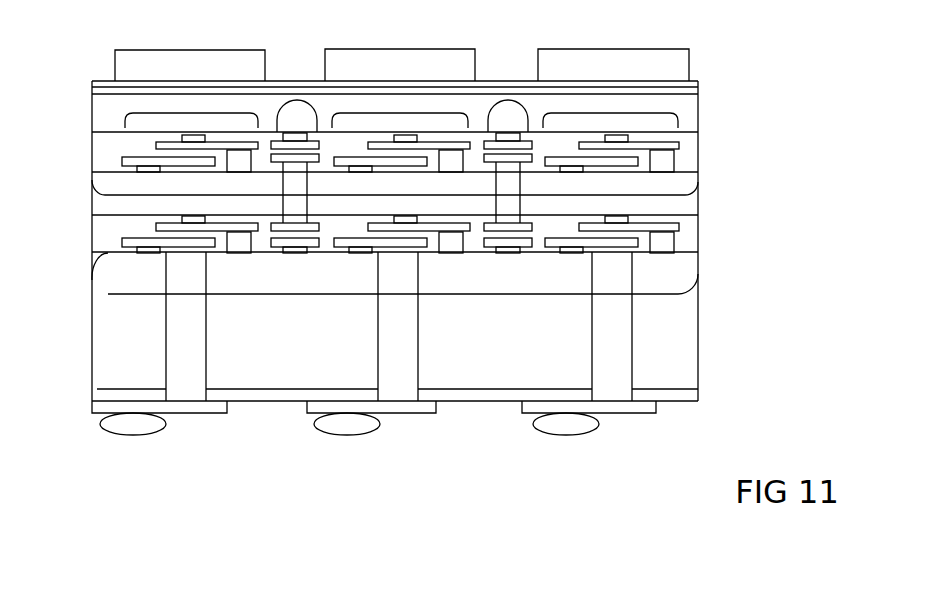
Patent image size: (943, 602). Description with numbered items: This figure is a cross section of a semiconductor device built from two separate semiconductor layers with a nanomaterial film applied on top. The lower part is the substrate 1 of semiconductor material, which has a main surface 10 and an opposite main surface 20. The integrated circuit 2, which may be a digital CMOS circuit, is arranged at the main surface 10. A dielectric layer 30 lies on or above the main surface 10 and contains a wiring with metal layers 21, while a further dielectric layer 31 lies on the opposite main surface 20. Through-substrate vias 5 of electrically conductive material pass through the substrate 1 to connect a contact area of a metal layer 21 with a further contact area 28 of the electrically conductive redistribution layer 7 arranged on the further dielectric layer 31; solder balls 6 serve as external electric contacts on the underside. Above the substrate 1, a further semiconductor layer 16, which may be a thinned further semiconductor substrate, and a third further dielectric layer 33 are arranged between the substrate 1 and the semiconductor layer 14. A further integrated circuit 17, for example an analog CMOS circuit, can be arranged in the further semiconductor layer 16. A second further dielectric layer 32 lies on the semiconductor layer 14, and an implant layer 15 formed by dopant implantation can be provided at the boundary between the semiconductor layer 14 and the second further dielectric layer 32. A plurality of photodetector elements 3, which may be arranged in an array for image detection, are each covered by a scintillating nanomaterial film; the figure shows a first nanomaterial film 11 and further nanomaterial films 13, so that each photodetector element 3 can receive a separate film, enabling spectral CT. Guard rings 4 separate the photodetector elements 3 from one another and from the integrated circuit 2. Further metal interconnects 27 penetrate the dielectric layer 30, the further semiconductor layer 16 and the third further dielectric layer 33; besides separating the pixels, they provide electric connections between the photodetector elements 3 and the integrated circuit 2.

The substrate 1 is at (676, 342).
The integrated circuit 2 is at (676, 273).
The photodetector element 3 is at (138, 123).
The guard ring 4 is at (300, 110).
The through-substrate via 5 is at (187, 352).
The solder ball 6 is at (140, 425).
The redistribution layer 7 is at (212, 407).
The main surface 10 is at (108, 293).
The nanomaterial film 11 is at (198, 60).
The further nanomaterial film 13 is at (417, 62).
The semiconductor layer 14 is at (693, 114).
The implant layer 15 is at (700, 87).
The further semiconductor layer 16 is at (112, 206).
The further integrated circuit 17 is at (692, 185).
The opposite main surface 20 is at (115, 388).
The metal layer 21 is at (102, 140).
The further metal interconnect 27 is at (307, 250).
The further contact area 28 is at (612, 467).
The dielectric layer 30 is at (687, 236).
The further dielectric layer 31 is at (687, 394).
The second further dielectric layer 32 is at (698, 83).
The third further dielectric layer 33 is at (687, 159).